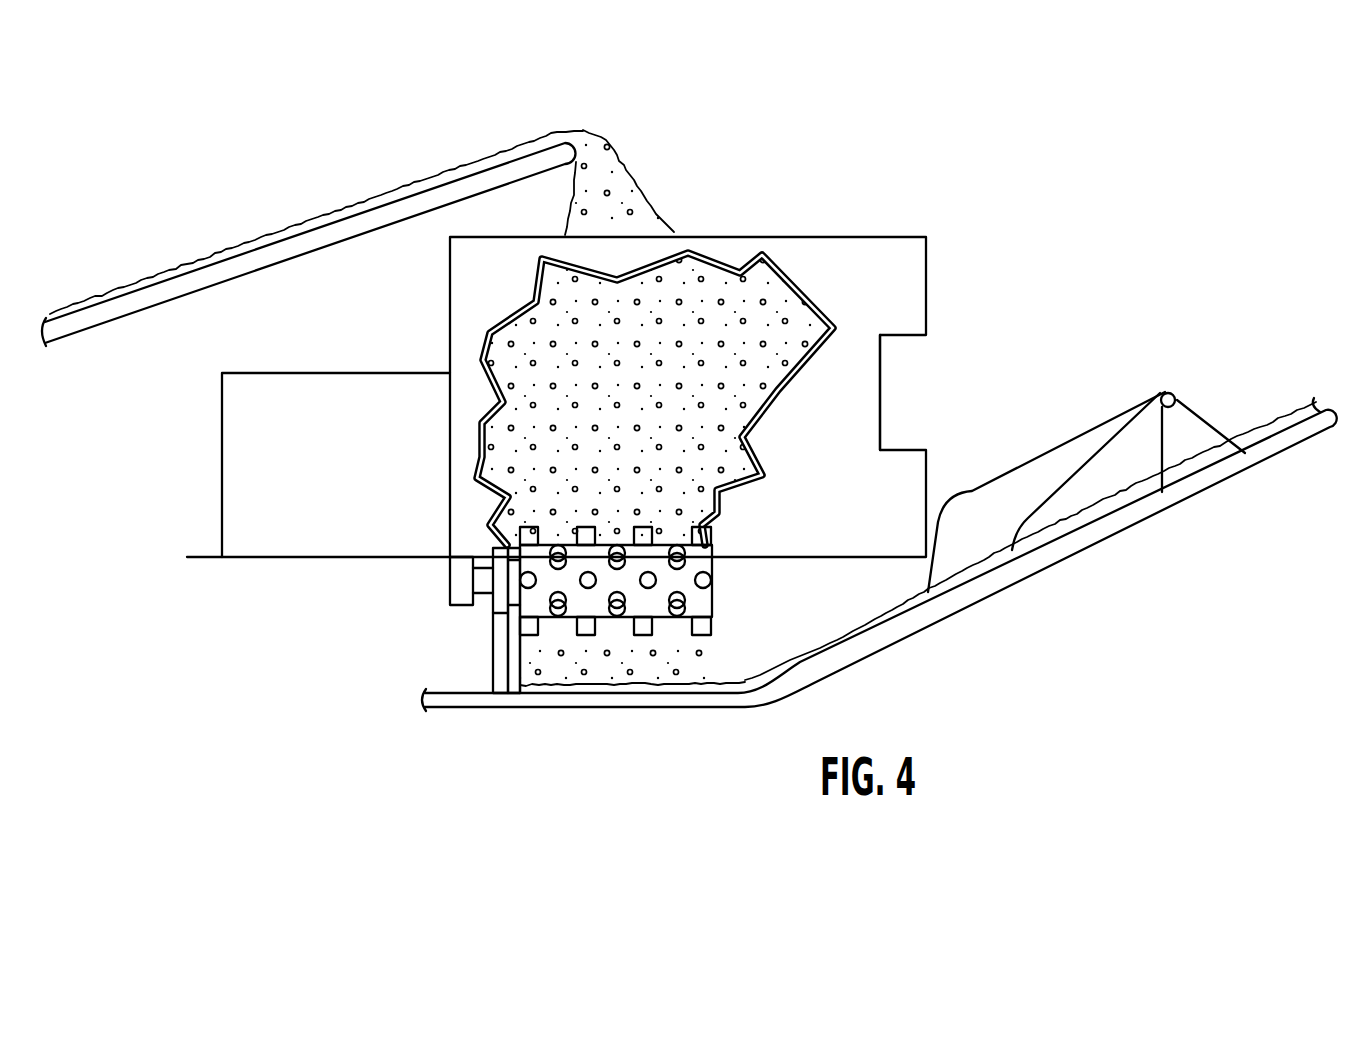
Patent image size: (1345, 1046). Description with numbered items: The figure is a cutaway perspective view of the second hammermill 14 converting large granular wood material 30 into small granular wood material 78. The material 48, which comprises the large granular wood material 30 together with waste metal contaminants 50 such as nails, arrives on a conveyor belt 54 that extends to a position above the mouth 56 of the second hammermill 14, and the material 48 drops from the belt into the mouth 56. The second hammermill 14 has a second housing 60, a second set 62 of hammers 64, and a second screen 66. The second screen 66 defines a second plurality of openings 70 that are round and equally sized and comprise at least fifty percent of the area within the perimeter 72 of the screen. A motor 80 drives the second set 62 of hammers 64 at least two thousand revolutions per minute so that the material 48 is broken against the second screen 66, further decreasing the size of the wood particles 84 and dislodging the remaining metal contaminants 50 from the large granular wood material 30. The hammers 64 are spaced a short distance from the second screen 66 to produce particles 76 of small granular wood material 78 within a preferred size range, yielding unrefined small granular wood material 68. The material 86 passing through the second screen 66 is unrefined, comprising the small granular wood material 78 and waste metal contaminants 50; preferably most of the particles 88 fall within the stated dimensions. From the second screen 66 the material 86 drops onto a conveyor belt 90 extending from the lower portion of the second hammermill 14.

The second hammermill 14 is at (898, 163).
The large granular wood material 30 is at (710, 306).
The material 48 is at (730, 316).
The waste metal contaminants 50 is at (753, 355).
The conveyor belt 54 is at (342, 218).
The mouth 56 is at (873, 312).
The second housing 60 is at (880, 417).
The second set of hammers 62 is at (576, 647).
The hammers 64 is at (597, 633).
The second screen 66 is at (667, 620).
The unrefined small granular wood material 68 is at (536, 654).
The second plurality of openings 70 is at (670, 578).
The perimeter 72 is at (688, 632).
The particles 76 is at (602, 653).
The small granular wood material 78 is at (575, 675).
The motor 80 is at (322, 372).
The wood particles 84 is at (728, 413).
The material 86 is at (677, 672).
The particles 88 is at (890, 608).
The conveyor belt 90 is at (1255, 425).